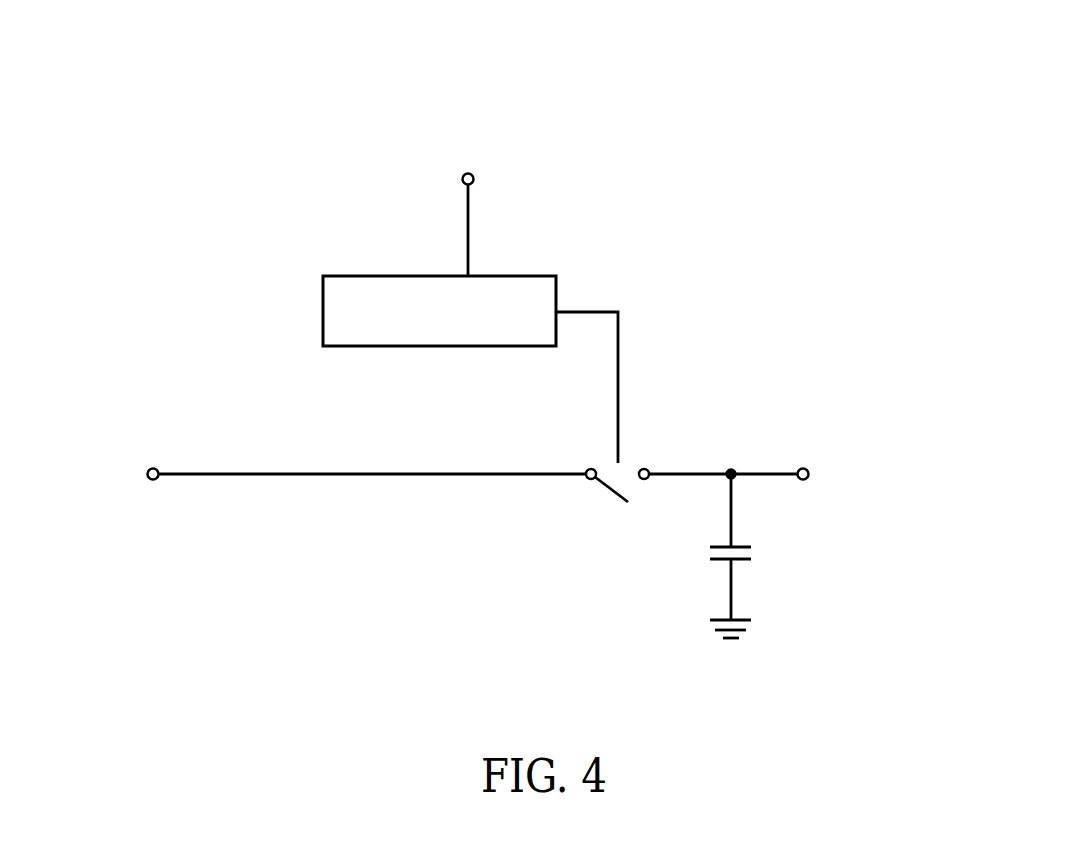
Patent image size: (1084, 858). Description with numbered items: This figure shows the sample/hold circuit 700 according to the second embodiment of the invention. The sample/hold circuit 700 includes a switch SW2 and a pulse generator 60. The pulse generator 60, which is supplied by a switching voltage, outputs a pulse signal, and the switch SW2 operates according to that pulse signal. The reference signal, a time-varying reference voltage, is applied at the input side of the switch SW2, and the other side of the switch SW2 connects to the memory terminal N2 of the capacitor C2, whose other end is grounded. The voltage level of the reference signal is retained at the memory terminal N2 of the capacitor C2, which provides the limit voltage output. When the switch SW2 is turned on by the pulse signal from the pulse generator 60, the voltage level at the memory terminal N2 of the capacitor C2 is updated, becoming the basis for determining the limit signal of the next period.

The sample/hold circuit 700 is at (693, 118).
The pulse generator 60 is at (518, 276).
The switch SW2 is at (617, 505).
The capacitor C2 is at (708, 547).
The memory terminal N2 is at (731, 459).